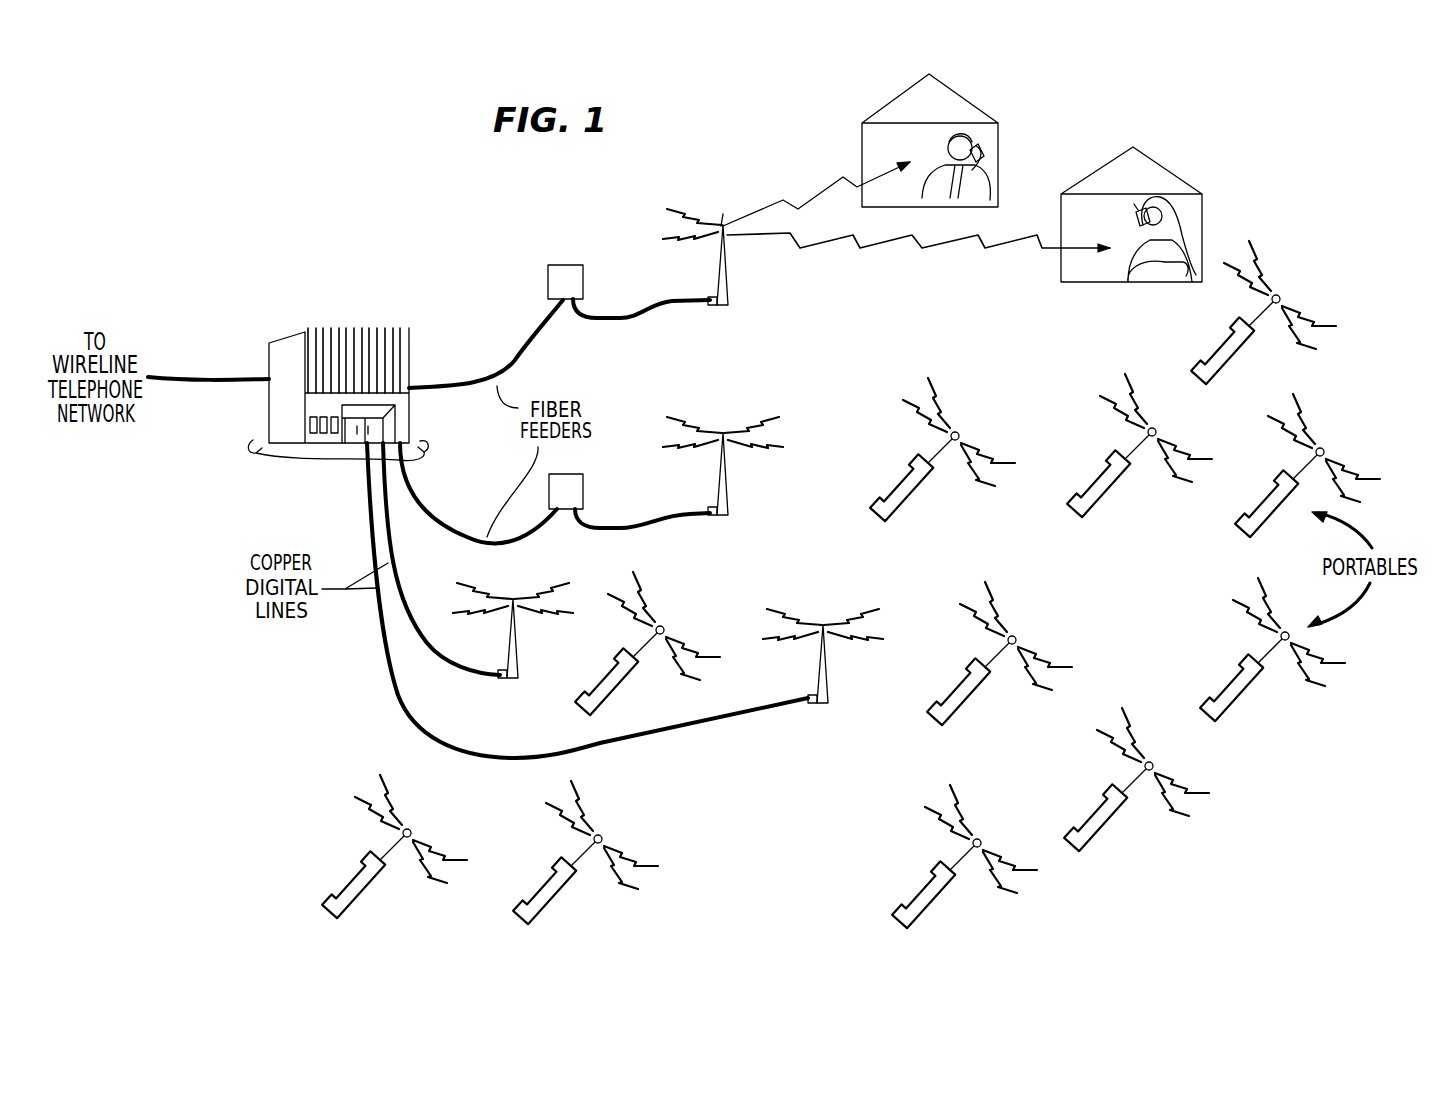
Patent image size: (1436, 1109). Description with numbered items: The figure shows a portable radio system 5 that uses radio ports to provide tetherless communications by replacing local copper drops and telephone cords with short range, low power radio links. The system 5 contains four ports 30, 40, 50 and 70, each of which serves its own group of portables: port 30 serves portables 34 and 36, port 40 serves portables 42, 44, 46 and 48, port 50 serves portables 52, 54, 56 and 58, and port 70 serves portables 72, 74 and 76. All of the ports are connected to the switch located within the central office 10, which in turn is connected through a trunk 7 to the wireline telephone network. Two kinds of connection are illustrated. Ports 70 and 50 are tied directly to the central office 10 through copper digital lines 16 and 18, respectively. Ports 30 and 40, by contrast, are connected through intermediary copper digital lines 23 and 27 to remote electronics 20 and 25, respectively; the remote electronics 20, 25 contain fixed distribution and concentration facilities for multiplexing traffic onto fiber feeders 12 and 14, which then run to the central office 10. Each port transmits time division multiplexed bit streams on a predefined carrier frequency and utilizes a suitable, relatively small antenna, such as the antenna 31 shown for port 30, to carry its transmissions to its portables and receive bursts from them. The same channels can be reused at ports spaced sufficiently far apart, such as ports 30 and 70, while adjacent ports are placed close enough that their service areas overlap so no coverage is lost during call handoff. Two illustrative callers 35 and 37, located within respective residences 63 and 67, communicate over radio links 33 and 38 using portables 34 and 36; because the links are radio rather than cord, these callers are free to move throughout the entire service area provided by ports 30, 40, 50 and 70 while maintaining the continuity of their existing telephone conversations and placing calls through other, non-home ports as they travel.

The system 5 is at (202, 783).
The trunk 7 is at (195, 378).
The central office 10 is at (303, 338).
The fiber feeder 12 is at (532, 350).
The fiber feeder 14 is at (472, 532).
The copper digital line 16 is at (460, 662).
The copper digital line 18 is at (400, 704).
The remote electronics 20 is at (548, 285).
The intermediary copper digital line 23 is at (622, 320).
The remote electronics 25 is at (584, 489).
The intermediary copper digital line 27 is at (698, 517).
The port 30 is at (716, 308).
The antenna 31 is at (723, 222).
The radio link 33 is at (820, 191).
The portable 34 is at (978, 150).
The caller 35 is at (985, 180).
The portable 36 is at (1138, 220).
The caller 37 is at (1176, 245).
The radio link 38 is at (880, 243).
The port 40 is at (728, 512).
The portable 42 is at (902, 478).
The portable 44 is at (1110, 460).
The portable 46 is at (1270, 493).
The portable 48 is at (1218, 347).
The port 50 is at (819, 706).
The portable 52 is at (935, 880).
The portable 54 is at (968, 672).
The portable 56 is at (1105, 798).
The portable 58 is at (1242, 672).
The residence 63 is at (975, 96).
The residence 67 is at (1165, 170).
The port 70 is at (508, 680).
The portable 72 is at (360, 867).
The portable 74 is at (618, 682).
The portable 76 is at (540, 884).